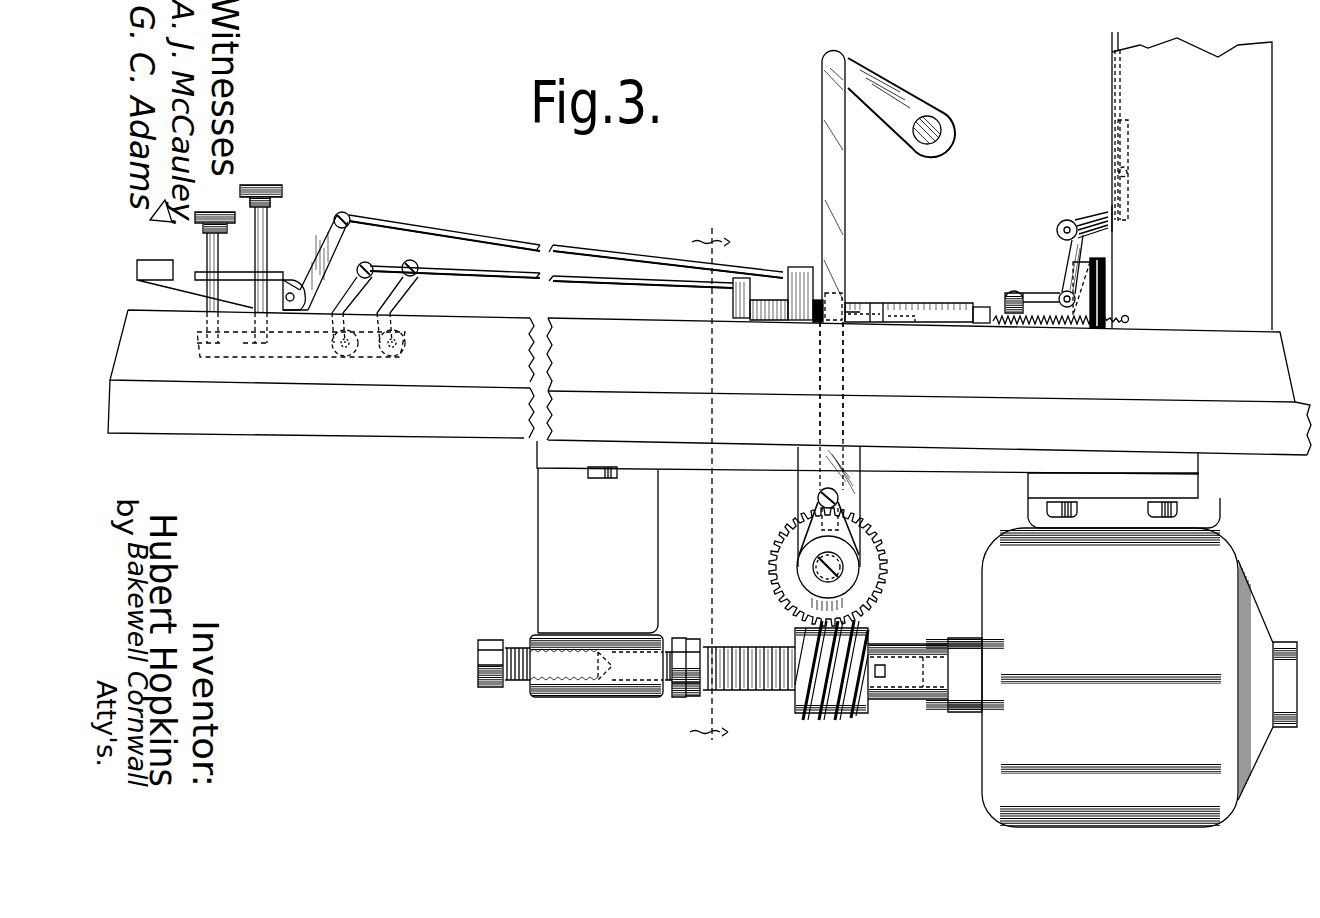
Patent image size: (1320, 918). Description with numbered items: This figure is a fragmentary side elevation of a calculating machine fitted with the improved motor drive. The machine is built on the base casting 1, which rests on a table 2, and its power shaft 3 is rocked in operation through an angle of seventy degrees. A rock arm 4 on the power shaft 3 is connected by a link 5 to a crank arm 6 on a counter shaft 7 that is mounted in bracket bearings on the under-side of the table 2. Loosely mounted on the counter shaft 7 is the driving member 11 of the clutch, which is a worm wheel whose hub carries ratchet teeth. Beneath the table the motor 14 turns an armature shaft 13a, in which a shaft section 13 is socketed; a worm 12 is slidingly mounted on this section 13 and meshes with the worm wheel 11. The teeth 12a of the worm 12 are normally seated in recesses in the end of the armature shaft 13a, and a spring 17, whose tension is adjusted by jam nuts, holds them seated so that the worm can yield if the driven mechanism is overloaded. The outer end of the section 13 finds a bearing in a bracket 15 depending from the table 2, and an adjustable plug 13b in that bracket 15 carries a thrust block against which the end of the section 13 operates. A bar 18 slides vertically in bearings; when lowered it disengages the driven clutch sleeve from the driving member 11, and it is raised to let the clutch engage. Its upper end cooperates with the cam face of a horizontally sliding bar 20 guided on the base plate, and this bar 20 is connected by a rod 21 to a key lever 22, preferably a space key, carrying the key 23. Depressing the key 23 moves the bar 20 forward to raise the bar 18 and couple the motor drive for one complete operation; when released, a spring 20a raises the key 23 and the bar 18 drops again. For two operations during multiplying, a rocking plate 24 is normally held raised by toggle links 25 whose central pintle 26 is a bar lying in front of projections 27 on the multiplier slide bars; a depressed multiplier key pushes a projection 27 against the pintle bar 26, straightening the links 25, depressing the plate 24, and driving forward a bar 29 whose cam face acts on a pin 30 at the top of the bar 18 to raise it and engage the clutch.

The base casting 1 is at (702, 356).
The table 2 is at (709, 417).
The power shaft 3 is at (941, 130).
The rock arm 4 is at (918, 84).
The link 5 is at (845, 218).
The crank arm 6 is at (812, 528).
The counter shaft 7 is at (843, 568).
The driving member of the clutch 11 is at (770, 575).
The worm 12 is at (850, 640).
The teeth of the worm 12a is at (879, 677).
The section of armature shaft 13 is at (765, 690).
The armature shaft 13a is at (935, 699).
The adjustable plug 13b is at (520, 682).
The motor 14 is at (1139, 650).
The bracket 15 is at (596, 582).
The spring 17 is at (756, 622).
The bar 18 is at (843, 375).
The horizontally sliding bar 20 is at (800, 322).
The spring 20a is at (1110, 327).
The rod 21 is at (482, 244).
The key lever 22 is at (320, 256).
The key 23 is at (152, 255).
The rocking plate 24 is at (1034, 292).
The toggle links 25 is at (1058, 236).
The central pintle 26 is at (1115, 242).
The projections 27 is at (1106, 280).
The bar 29 is at (948, 320).
The pin 30 is at (838, 298).